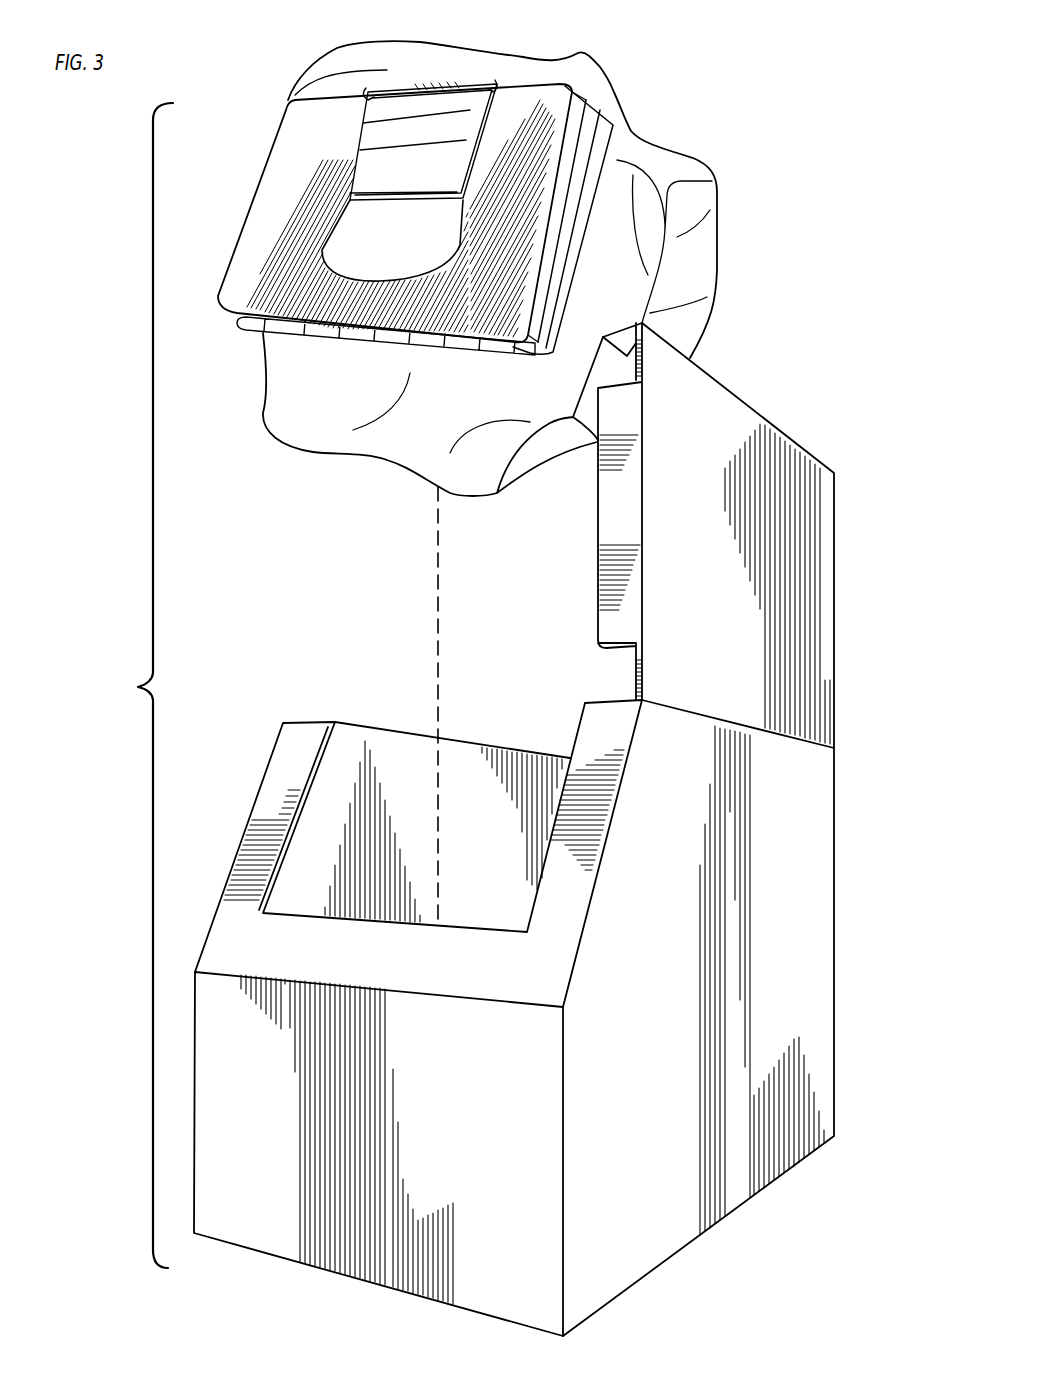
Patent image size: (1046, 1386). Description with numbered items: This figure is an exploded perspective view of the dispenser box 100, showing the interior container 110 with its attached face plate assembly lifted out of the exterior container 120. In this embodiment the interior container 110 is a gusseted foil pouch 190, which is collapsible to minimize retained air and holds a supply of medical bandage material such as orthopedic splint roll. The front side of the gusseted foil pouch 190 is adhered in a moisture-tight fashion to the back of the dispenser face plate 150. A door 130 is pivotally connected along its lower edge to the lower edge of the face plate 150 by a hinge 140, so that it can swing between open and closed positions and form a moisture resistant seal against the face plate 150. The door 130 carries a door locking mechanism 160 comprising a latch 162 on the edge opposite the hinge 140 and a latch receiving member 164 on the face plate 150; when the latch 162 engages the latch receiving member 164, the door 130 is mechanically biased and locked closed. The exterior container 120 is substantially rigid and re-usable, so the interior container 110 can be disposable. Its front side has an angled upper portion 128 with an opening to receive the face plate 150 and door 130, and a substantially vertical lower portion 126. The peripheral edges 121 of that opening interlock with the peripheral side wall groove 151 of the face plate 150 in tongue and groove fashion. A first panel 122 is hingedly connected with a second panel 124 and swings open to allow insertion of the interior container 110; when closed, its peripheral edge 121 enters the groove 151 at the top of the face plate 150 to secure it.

The dispenser box 100 is at (132, 685).
The interior container 110 is at (700, 223).
The exterior container 120 is at (499, 829).
The peripheral edges 121 is at (394, 750).
The first panel 122 is at (797, 480).
The second panel 124 is at (767, 1013).
The substantially vertical lower portion 126 is at (273, 1163).
The angled upper portion 128 is at (273, 802).
The door 130 is at (277, 223).
The hinge 140 is at (255, 328).
The dispenser face plate 150 is at (587, 135).
The peripheral side wall groove 151 is at (603, 162).
The door locking mechanism 160 is at (426, 105).
The latch 162 is at (443, 122).
The latch receiving member 164 is at (607, 40).
The gusseted foil pouch 190 is at (657, 257).